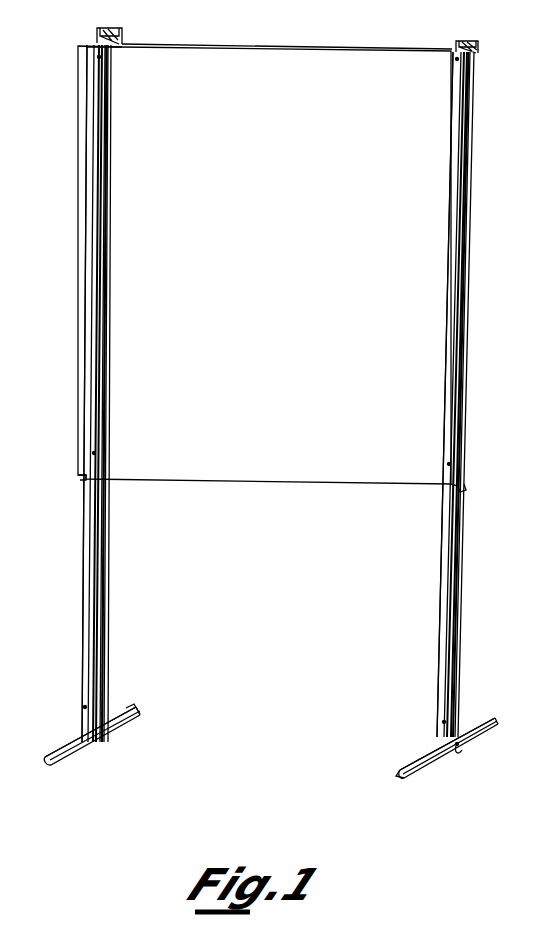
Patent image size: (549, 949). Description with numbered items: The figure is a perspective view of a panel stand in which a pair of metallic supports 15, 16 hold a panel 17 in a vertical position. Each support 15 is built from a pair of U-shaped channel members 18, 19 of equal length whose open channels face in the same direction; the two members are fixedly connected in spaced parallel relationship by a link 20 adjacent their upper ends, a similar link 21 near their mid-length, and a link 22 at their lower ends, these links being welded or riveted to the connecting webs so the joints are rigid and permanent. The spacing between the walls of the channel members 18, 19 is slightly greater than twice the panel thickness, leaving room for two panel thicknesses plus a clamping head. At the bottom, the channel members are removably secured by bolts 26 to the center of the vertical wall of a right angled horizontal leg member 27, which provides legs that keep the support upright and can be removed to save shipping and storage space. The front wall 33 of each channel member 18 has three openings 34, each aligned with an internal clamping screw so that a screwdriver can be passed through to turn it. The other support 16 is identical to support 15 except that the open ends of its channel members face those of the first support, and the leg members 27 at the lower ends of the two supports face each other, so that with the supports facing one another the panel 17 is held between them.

The metallic support 15 is at (73, 600).
The metallic support 16 is at (431, 608).
The panel 17 is at (262, 50).
The U-shaped channel member 18 is at (93, 527).
The U-shaped channel member 19 is at (106, 525).
The link 20 is at (98, 42).
The link 21 is at (80, 479).
The link 22 is at (75, 741).
The bolt 26 is at (455, 747).
The right angled horizontal leg member 27 is at (130, 712).
The front wall 33 is at (97, 238).
The opening 34 is at (101, 58).